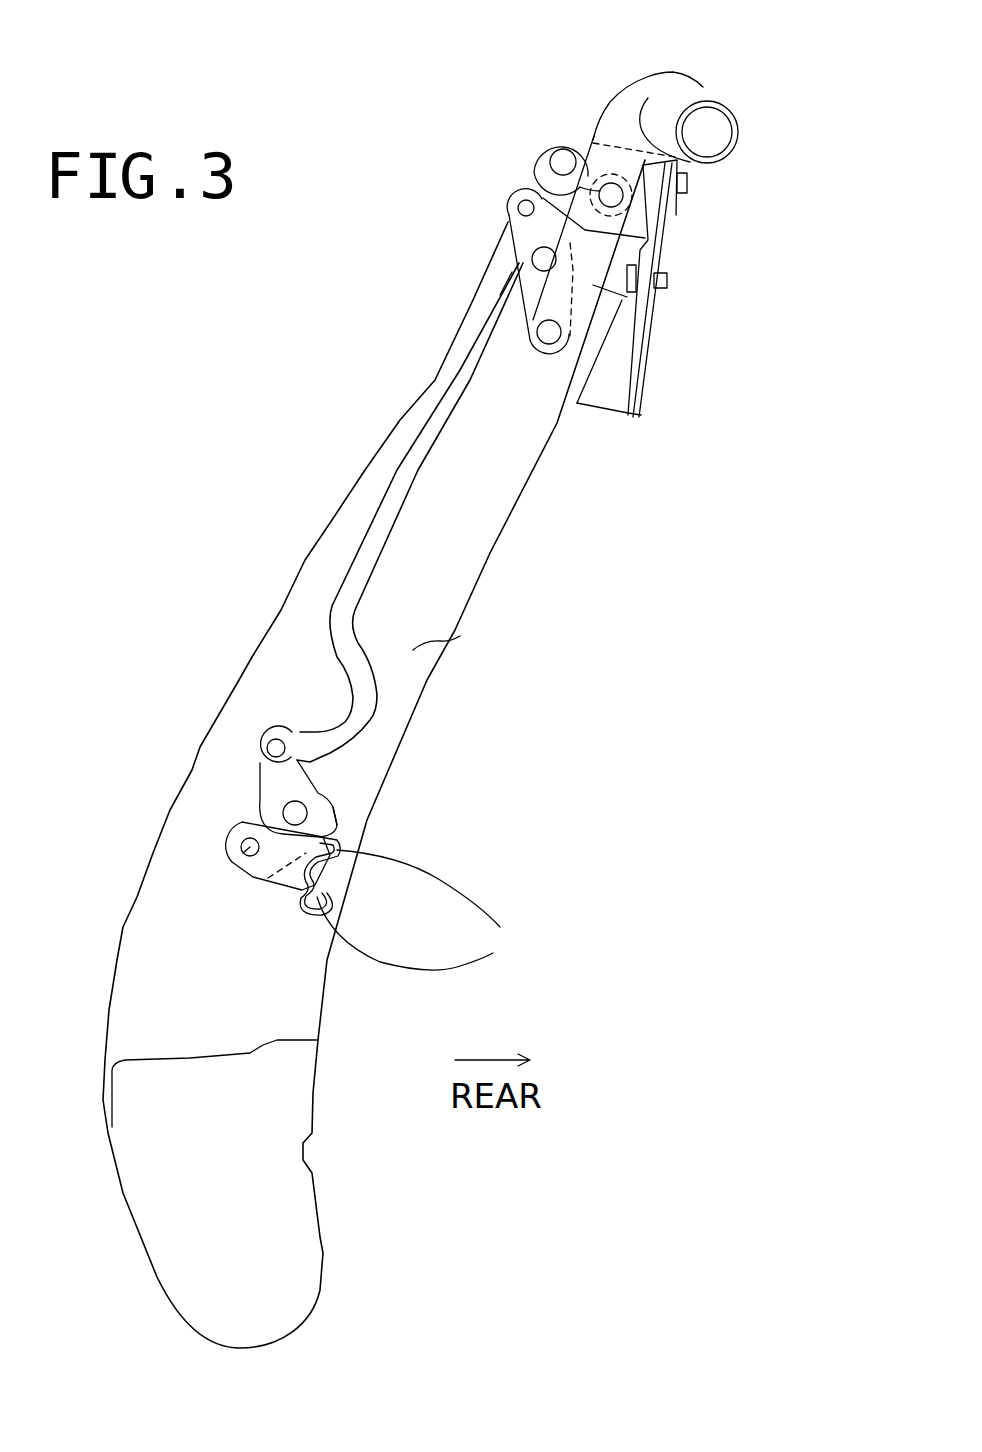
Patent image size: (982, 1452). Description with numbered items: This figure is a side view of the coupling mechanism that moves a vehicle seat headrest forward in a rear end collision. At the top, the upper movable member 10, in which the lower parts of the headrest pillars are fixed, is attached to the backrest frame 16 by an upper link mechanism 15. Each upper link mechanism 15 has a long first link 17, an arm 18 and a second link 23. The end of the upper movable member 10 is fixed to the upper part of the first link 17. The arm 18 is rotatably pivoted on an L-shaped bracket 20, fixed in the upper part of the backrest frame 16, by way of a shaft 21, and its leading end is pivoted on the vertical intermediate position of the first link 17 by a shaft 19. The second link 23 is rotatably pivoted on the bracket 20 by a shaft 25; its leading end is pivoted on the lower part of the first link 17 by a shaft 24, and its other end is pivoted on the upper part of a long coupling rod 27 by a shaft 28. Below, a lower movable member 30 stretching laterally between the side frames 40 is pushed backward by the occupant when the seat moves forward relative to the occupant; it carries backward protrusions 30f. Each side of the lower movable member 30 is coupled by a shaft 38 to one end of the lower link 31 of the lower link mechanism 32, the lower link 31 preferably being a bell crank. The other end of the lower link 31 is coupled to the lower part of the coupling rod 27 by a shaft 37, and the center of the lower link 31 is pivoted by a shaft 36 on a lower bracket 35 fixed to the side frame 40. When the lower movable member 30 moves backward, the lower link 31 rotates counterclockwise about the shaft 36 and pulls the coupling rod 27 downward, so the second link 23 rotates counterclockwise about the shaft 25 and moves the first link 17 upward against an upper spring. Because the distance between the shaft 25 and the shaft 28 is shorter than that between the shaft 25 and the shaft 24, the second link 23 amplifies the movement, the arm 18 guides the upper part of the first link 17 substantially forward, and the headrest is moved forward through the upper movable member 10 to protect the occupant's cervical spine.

The upper movable member 10 is at (737, 145).
The upper link mechanism 15 is at (666, 162).
The backrest frame 16 is at (483, 572).
The first link 17 is at (663, 73).
The arm 18 is at (540, 183).
The shaft 19 is at (612, 200).
The L-shaped bracket 20 is at (538, 163).
The shaft 21 is at (553, 142).
The second link 23 is at (513, 270).
The shaft 24 is at (546, 335).
The shaft 25 is at (545, 259).
The coupling rod 27 is at (412, 455).
The shaft 28 is at (454, 273).
The lower movable member 30 is at (320, 893).
The backward protrusions 30f is at (436, 910).
The lower link 31 is at (205, 894).
The lower link mechanism 32 is at (302, 754).
The lower bracket 35 is at (343, 810).
The shaft 36 is at (260, 785).
The shaft 37 is at (268, 742).
The shaft 38 is at (233, 862).
The side frame 40 is at (460, 636).